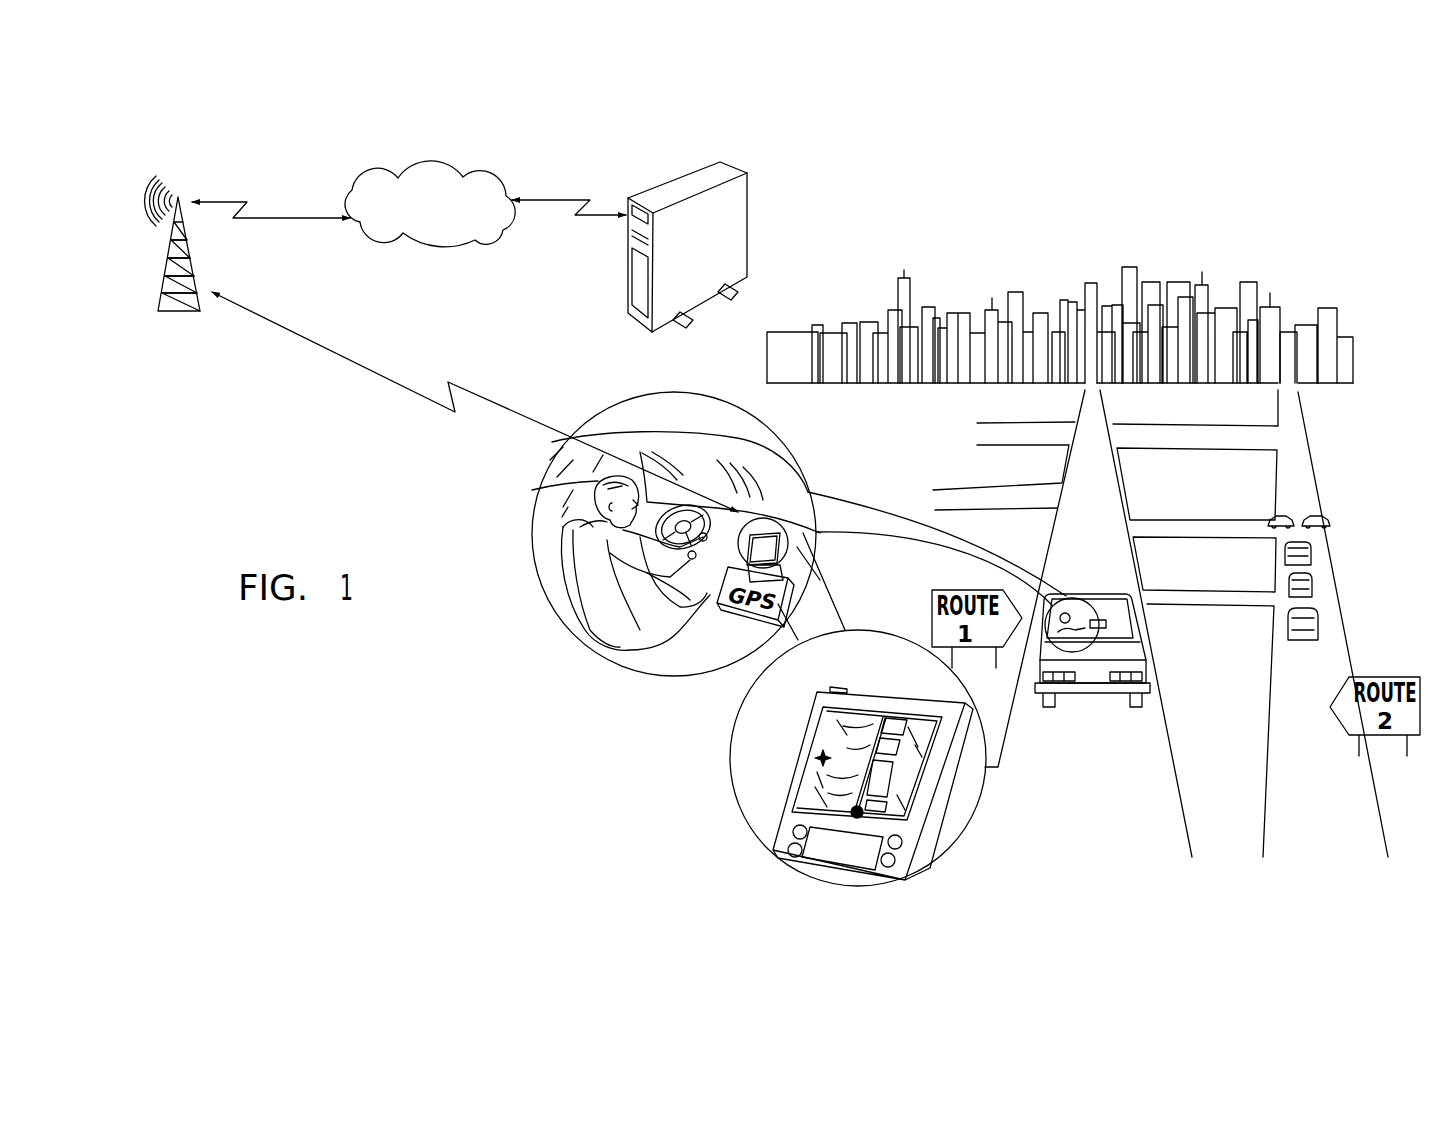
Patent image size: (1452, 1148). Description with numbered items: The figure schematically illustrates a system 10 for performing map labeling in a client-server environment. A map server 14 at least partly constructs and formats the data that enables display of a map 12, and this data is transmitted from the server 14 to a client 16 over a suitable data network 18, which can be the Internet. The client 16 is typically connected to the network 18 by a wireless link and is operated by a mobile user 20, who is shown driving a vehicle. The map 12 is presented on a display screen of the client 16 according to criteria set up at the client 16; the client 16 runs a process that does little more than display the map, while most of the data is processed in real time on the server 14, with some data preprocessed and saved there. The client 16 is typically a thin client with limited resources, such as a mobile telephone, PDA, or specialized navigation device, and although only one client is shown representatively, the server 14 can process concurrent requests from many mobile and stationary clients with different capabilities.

The system 10 is at (792, 213).
The map 12 is at (858, 738).
The map server 14 is at (627, 265).
The client 16 is at (802, 762).
The data network 18 is at (385, 241).
The mobile user 20 is at (597, 489).